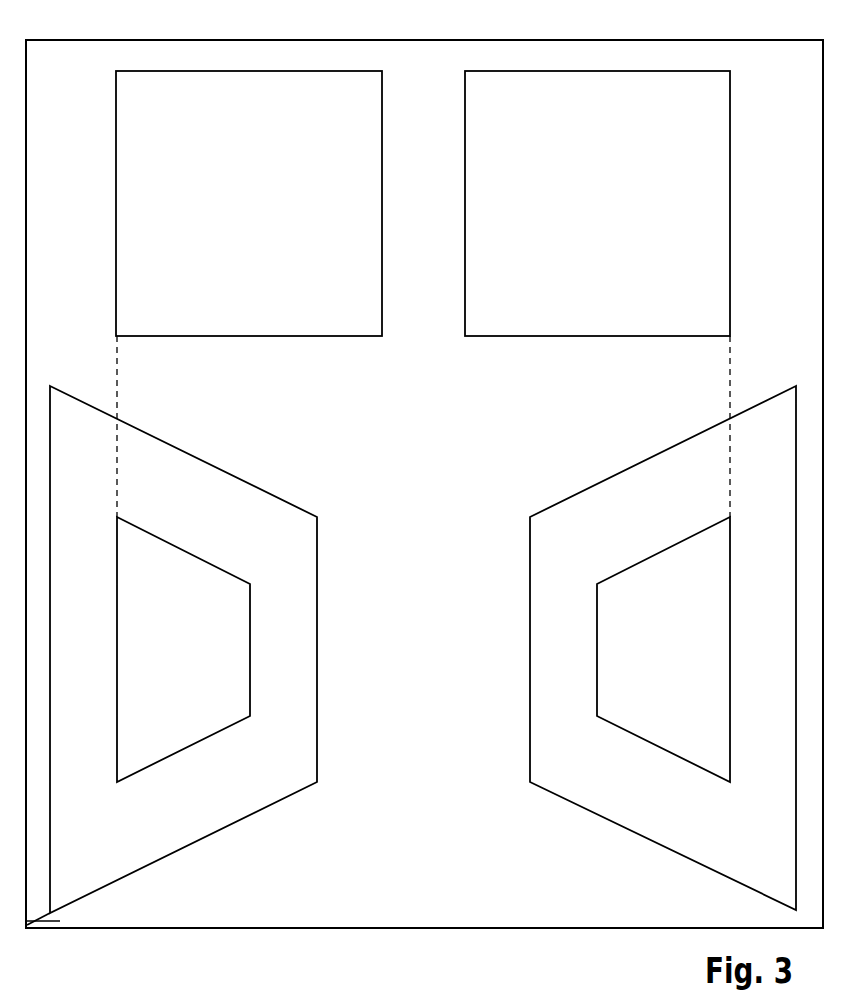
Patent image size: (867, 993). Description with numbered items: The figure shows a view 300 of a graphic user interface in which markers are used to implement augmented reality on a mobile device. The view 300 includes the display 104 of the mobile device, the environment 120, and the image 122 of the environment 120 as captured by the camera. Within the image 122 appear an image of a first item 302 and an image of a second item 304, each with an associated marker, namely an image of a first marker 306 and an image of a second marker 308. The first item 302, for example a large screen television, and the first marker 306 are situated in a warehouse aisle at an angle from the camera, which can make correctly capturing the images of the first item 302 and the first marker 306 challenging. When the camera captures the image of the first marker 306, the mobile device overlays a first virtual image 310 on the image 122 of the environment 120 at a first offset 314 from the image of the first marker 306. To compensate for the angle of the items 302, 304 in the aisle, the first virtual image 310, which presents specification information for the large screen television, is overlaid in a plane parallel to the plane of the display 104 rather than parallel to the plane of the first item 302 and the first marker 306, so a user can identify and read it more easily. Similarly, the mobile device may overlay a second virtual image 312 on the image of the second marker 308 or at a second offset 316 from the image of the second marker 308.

The view 300 is at (410, 62).
The display 104 is at (345, 928).
The environment 120 is at (27, 925).
The image of the environment 122 is at (35, 922).
The image of a first item 302 is at (317, 768).
The image of a second item 304 is at (530, 741).
The image of a first marker 306 is at (250, 584).
The image of a second marker 308 is at (597, 661).
The first virtual image 310 is at (383, 130).
The second virtual image 312 is at (465, 318).
The first offset 314 is at (117, 362).
The second offset 316 is at (730, 400).